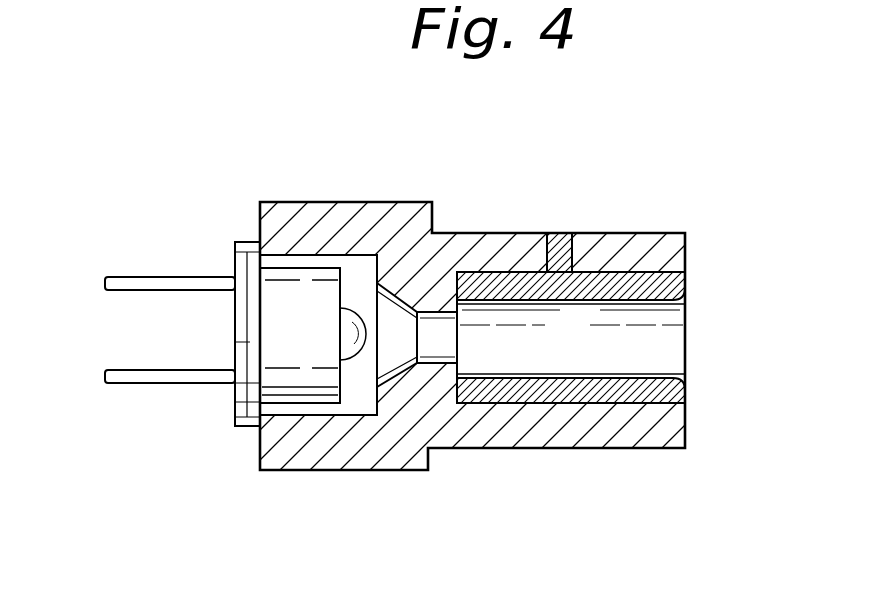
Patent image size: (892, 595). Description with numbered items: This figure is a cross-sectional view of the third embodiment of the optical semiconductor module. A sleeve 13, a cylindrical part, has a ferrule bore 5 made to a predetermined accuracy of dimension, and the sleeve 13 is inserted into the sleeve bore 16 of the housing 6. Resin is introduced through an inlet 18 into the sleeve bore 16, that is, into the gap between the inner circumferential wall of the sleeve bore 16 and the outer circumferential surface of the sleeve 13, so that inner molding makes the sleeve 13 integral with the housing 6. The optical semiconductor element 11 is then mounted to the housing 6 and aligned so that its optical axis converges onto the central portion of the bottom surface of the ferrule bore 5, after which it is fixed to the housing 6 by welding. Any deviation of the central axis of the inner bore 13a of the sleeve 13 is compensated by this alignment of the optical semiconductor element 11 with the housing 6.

The ferrule bore 5 is at (640, 367).
The housing 6 is at (467, 250).
The optical semiconductor element 11 is at (246, 393).
The sleeve 13 is at (657, 272).
The inner bore of the sleeve 13a is at (602, 310).
The sleeve bore 16 is at (582, 394).
The inlet 18 is at (572, 258).